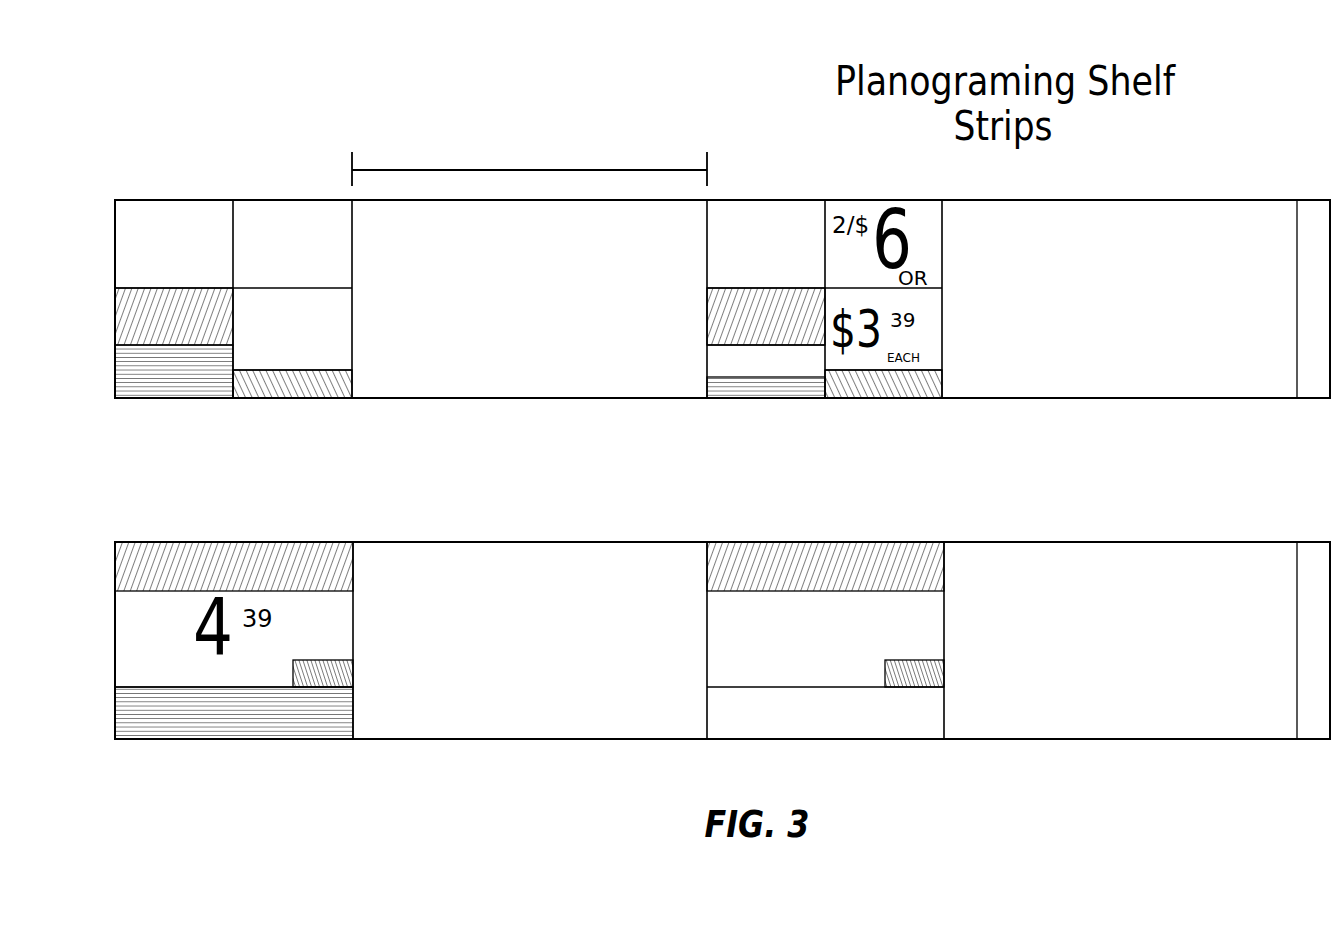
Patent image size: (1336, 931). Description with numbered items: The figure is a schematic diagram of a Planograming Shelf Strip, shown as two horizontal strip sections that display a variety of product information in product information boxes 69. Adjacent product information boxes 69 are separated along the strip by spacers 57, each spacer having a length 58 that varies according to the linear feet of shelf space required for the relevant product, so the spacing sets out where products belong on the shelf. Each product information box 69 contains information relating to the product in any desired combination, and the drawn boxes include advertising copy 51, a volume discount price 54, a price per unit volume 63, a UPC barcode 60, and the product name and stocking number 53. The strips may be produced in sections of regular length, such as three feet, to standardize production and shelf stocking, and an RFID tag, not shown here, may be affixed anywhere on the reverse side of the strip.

The advertising copy 51 is at (190, 199).
The product name and stocking number 53 is at (145, 320).
The volume discount price 54 is at (288, 199).
The spacer 57 is at (565, 398).
The length 58 is at (612, 170).
The UPC barcode 60 is at (203, 378).
The price per unit volume 63 is at (326, 397).
The product information box 69 is at (204, 273).